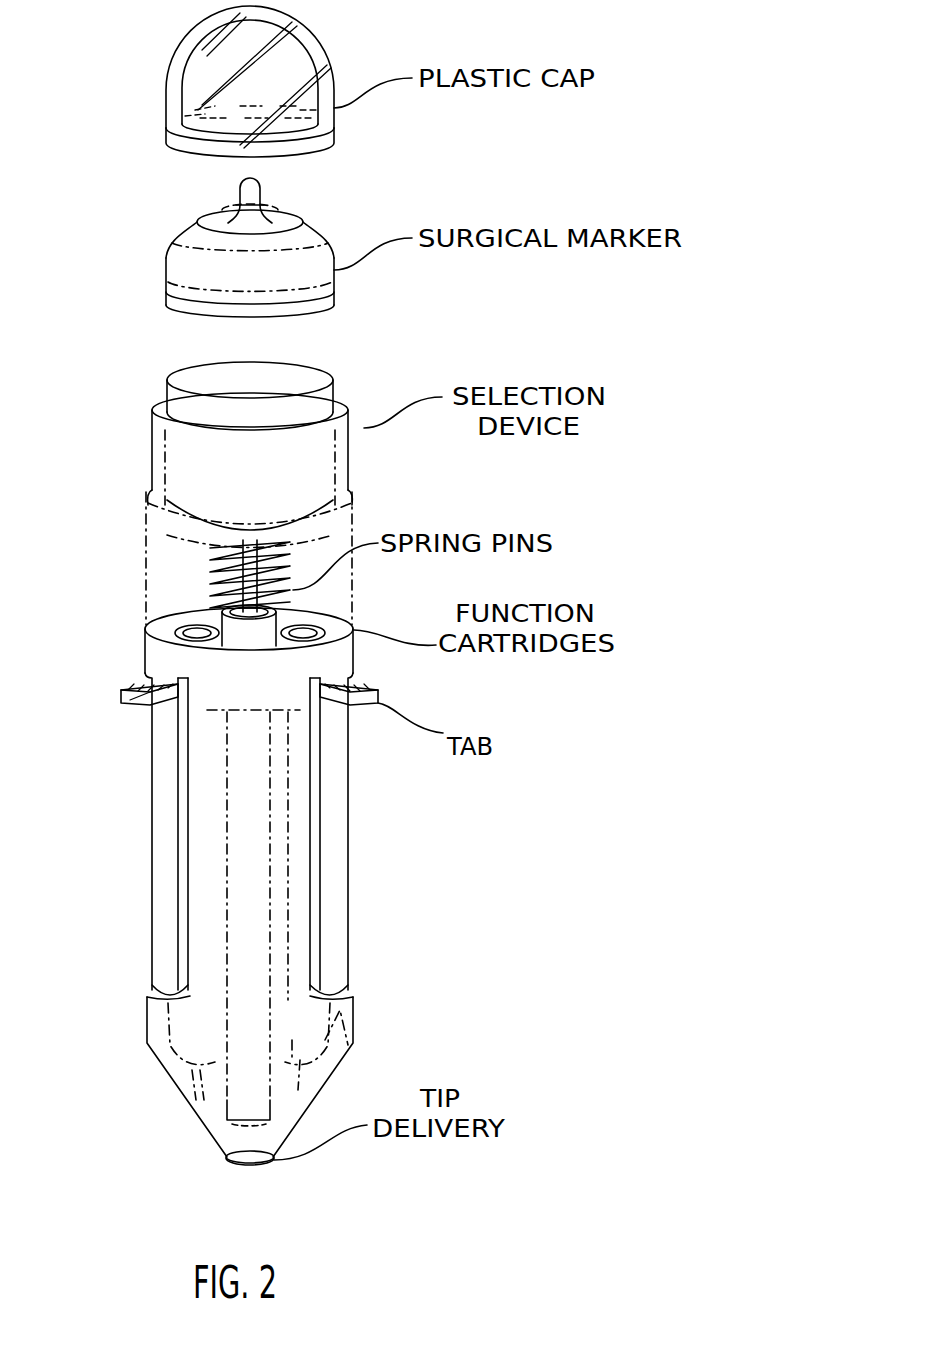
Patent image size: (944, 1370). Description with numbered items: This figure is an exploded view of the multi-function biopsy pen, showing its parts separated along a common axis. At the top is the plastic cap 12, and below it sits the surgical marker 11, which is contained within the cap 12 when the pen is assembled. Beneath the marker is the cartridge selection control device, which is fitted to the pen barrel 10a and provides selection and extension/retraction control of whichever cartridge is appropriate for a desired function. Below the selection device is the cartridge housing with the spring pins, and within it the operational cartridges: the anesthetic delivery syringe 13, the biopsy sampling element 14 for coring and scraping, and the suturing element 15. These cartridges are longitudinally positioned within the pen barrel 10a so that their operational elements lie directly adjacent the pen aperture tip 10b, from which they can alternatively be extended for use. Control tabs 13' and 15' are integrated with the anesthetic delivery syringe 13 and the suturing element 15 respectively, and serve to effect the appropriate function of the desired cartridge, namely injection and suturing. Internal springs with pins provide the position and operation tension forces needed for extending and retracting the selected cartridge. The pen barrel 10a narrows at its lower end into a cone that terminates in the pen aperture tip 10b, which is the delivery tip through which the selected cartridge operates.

The cap 12 is at (308, 28).
The surgical marker 11 is at (331, 222).
The anesthetic delivery syringe 13 is at (154, 618).
The biopsy sampling element 14 is at (278, 618).
The suturing element 15 is at (354, 613).
The control tab 13' is at (113, 706).
The control tab 15' is at (380, 692).
The pen barrel 10a is at (353, 1018).
The pen aperture tip 10b is at (228, 1162).